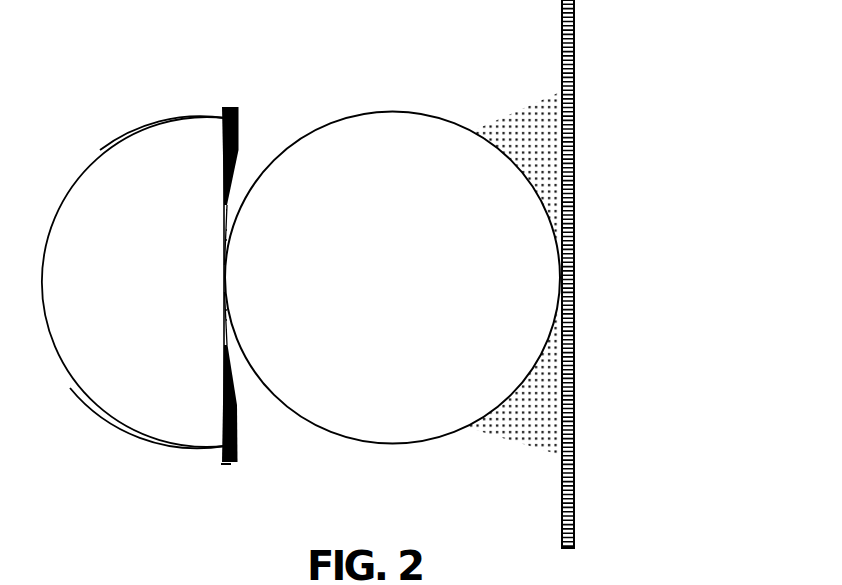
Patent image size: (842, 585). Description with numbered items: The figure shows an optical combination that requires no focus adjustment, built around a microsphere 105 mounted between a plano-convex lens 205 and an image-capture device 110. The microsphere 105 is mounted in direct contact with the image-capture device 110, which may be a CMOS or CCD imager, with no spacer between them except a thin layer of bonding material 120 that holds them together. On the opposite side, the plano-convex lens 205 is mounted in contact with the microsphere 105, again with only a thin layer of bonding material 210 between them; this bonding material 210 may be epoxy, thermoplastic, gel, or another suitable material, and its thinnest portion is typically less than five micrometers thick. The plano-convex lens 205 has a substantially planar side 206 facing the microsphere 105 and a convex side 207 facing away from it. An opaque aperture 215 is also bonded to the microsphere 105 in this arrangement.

The microsphere 105 is at (370, 155).
The image-capture device 110 is at (587, 73).
The bonding material 120 is at (541, 416).
The plano-convex lens 205 is at (105, 202).
The substantially planar side 206 is at (224, 208).
The convex side 207 is at (73, 390).
The bonding material 210 is at (214, 352).
The aperture edge / substrate 215 is at (222, 476).